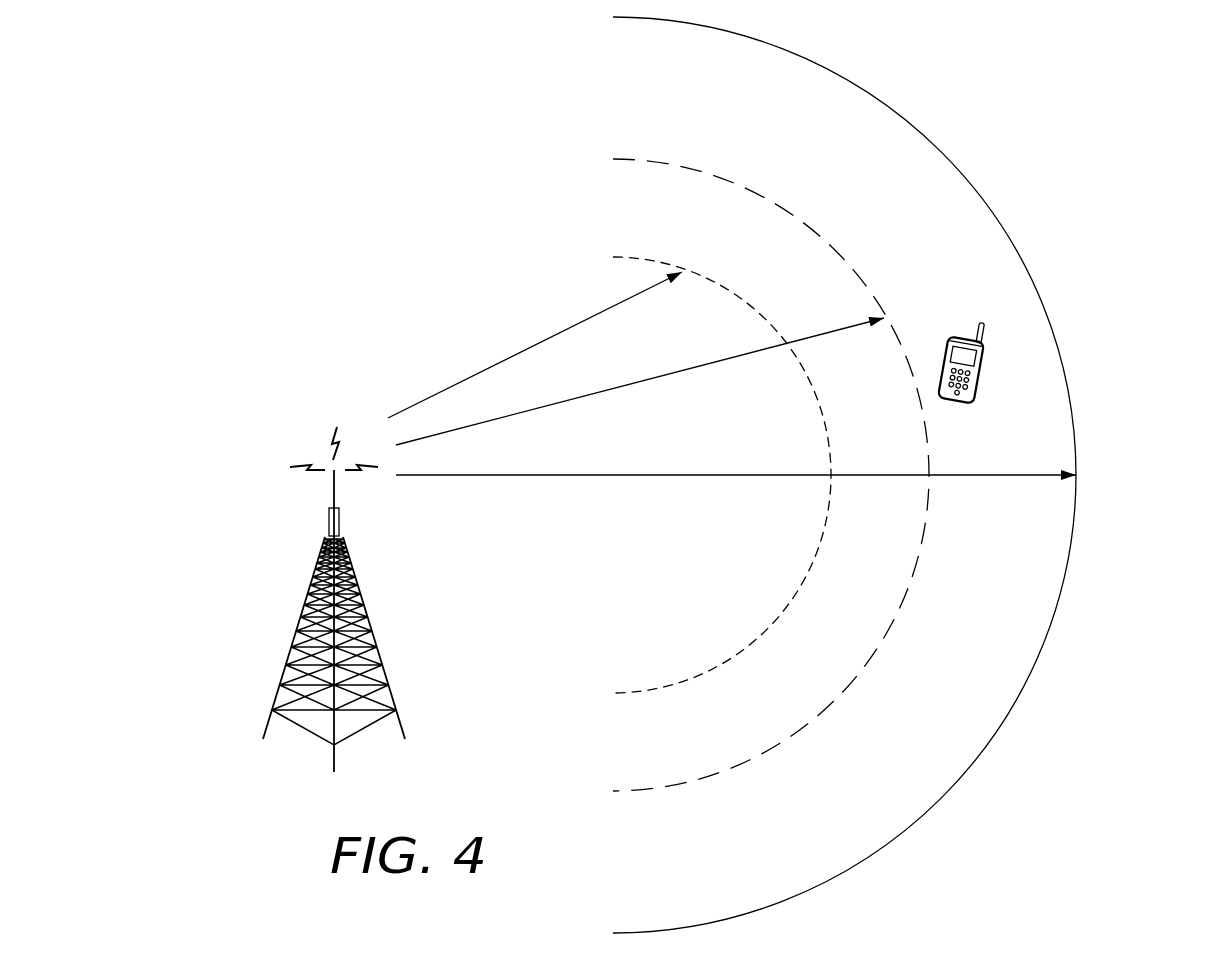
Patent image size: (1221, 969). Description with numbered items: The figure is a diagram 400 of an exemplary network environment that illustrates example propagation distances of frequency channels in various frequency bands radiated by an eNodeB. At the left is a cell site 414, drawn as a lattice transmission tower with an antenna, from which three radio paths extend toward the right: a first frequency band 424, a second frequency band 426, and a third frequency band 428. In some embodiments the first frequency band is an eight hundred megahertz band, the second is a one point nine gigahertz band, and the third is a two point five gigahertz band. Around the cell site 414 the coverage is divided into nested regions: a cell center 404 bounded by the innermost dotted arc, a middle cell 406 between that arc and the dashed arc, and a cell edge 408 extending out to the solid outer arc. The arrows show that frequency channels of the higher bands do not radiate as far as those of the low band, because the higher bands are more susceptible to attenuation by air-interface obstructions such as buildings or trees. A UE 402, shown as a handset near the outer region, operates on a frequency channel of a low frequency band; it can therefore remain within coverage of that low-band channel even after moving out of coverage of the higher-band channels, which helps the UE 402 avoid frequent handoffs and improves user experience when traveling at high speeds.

The diagram 400 is at (1160, 111).
The UE 402 is at (983, 381).
The cell center 404 is at (693, 652).
The middle cell 406 is at (834, 652).
The cell edge 408 is at (957, 681).
The cell site 414 is at (298, 430).
The first frequency band 424 is at (596, 312).
The second frequency band 426 is at (598, 396).
The third frequency band 428 is at (566, 481).